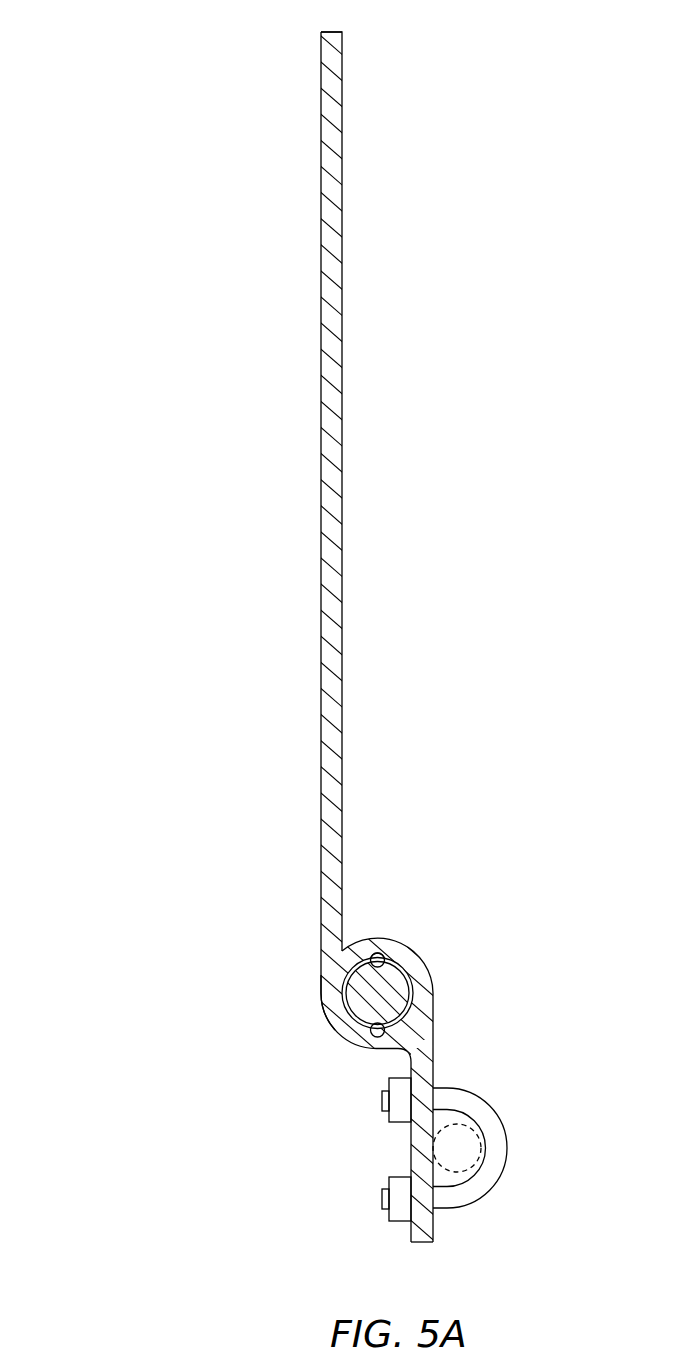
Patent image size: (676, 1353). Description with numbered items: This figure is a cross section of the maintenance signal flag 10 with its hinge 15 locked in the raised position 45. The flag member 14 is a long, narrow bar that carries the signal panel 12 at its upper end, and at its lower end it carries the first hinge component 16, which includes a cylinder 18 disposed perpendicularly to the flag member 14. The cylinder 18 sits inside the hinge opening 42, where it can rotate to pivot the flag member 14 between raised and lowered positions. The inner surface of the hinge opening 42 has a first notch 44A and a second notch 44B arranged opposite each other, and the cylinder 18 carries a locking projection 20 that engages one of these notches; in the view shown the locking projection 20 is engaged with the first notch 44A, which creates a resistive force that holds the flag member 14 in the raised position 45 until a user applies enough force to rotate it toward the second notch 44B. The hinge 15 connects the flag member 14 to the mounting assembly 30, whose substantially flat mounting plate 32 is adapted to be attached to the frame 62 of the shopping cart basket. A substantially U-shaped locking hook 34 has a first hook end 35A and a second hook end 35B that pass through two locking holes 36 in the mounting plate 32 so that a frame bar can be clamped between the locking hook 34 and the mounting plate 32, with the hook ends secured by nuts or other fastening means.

The maintenance signal flag 10 is at (152, 891).
The signal panel 12 is at (333, 32).
The flag member 14 is at (342, 365).
The hinge 15 is at (334, 993).
The first hinge component 16 is at (433, 992).
The cylinder 18 is at (390, 982).
The locking projection 20 is at (376, 954).
The mounting assembly 30 is at (425, 1243).
The mounting plate 32 is at (428, 1223).
The locking hook 34 is at (507, 1145).
The first hook end 35A is at (382, 1102).
The second hook end 35B is at (382, 1200).
The locking holes 36 is at (400, 1122).
The hinge opening 42 is at (410, 985).
The first notch 44A is at (381, 955).
The second notch 44B is at (383, 1033).
The raised position 45 is at (395, 140).
The frame 62 is at (467, 1128).